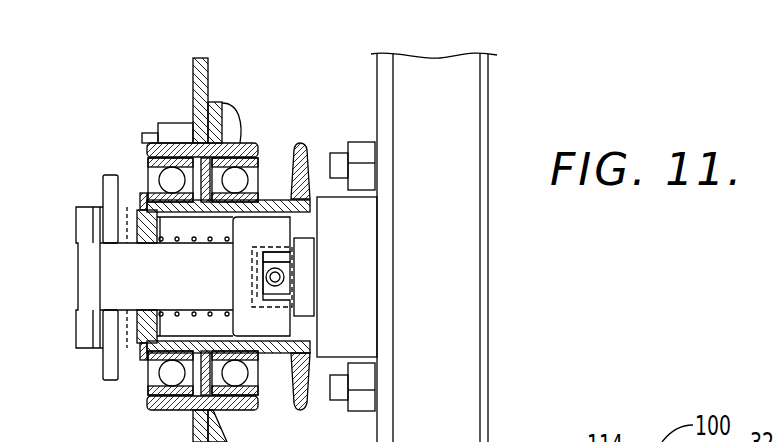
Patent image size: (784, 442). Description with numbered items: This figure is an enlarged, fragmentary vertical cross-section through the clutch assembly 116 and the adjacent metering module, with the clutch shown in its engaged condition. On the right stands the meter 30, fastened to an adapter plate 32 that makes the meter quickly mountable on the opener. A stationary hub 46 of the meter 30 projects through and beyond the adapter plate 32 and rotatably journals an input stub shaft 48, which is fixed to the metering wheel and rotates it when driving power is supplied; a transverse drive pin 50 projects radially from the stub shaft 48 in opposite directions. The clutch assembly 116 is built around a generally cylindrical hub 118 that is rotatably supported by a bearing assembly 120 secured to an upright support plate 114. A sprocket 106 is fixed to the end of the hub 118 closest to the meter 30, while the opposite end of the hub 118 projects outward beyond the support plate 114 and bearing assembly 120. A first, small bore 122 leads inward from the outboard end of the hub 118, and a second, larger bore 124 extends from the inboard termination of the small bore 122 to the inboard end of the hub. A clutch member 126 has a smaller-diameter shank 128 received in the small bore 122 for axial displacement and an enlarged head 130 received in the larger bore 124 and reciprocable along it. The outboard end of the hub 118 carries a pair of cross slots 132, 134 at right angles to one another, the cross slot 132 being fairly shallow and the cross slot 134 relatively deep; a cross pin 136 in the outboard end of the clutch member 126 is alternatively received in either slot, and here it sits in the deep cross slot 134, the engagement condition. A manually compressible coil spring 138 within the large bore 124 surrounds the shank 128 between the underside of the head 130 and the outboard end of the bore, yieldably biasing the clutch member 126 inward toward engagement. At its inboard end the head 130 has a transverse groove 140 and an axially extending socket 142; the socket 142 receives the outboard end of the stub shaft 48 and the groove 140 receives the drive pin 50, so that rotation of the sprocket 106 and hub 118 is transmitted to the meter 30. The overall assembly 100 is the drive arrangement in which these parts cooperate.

The meter 30 is at (492, 79).
The adapter plate 32 is at (373, 77).
The hub 46 is at (367, 310).
The input stub shaft 48 is at (287, 268).
The drive pin 50 is at (281, 284).
The roller assembly 100 is at (227, 42).
The sprocket 106 is at (306, 152).
The support plate 114 is at (194, 58).
The clutch assembly 116 is at (277, 127).
The hub 118 is at (269, 353).
The bearing assembly 120 is at (221, 110).
The small bore 122 is at (140, 247).
The large bore 124 is at (201, 217).
The clutch member 126 is at (298, 225).
The shank 128 is at (108, 294).
The head 130 is at (283, 323).
The shallow cross slot 132 is at (75, 275).
The deep cross slot 134 is at (97, 218).
The cross pin 136 is at (106, 183).
The coil spring 138 is at (147, 343).
The transverse groove 140 is at (292, 260).
The socket 142 is at (252, 289).